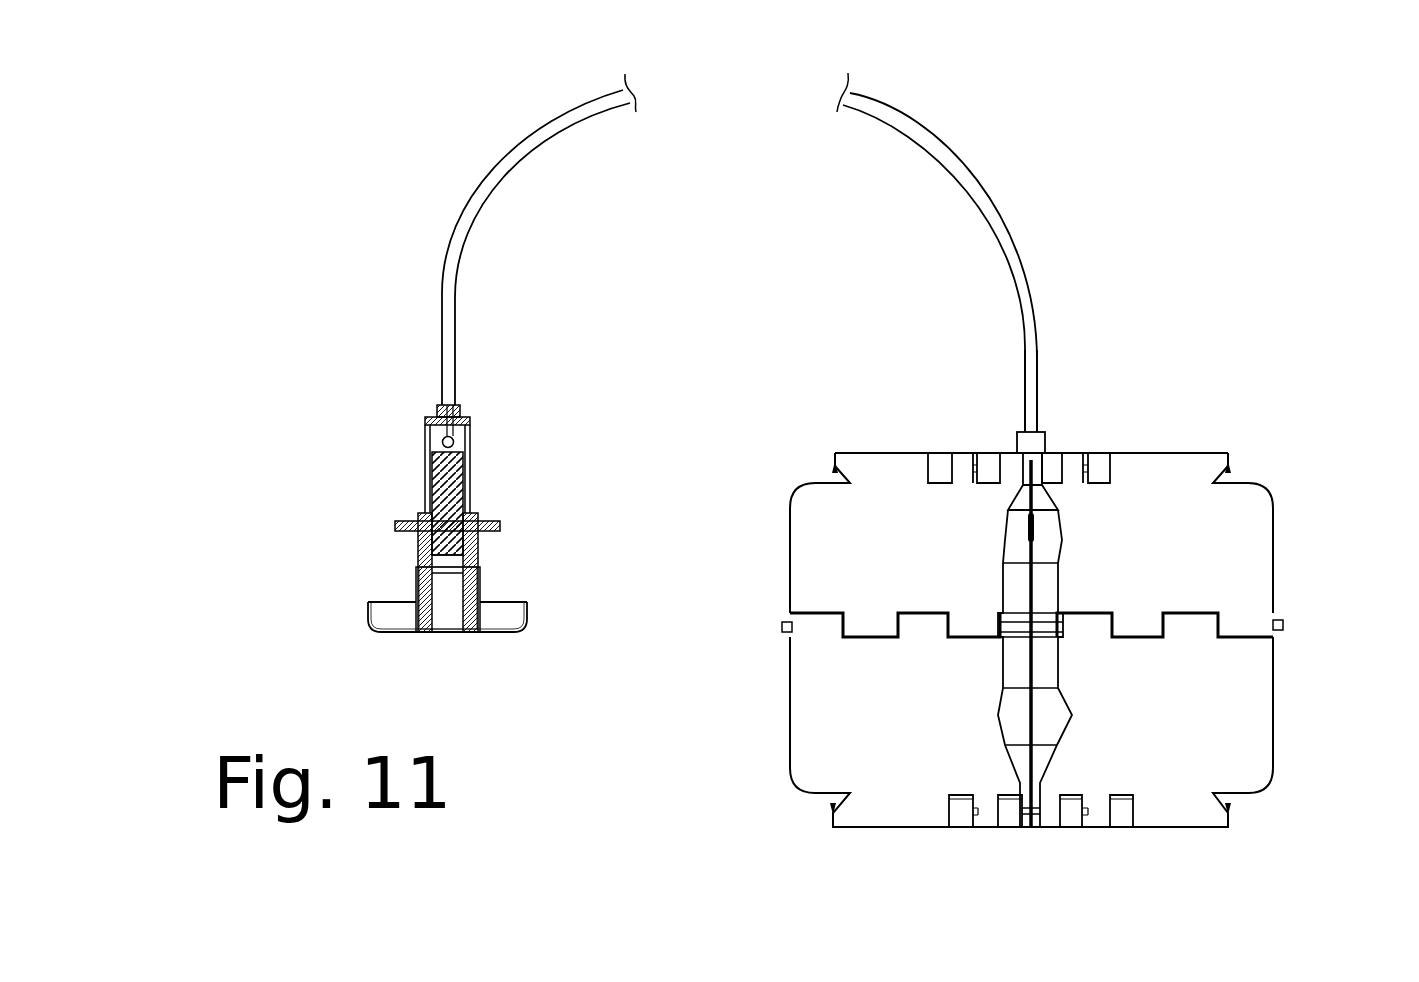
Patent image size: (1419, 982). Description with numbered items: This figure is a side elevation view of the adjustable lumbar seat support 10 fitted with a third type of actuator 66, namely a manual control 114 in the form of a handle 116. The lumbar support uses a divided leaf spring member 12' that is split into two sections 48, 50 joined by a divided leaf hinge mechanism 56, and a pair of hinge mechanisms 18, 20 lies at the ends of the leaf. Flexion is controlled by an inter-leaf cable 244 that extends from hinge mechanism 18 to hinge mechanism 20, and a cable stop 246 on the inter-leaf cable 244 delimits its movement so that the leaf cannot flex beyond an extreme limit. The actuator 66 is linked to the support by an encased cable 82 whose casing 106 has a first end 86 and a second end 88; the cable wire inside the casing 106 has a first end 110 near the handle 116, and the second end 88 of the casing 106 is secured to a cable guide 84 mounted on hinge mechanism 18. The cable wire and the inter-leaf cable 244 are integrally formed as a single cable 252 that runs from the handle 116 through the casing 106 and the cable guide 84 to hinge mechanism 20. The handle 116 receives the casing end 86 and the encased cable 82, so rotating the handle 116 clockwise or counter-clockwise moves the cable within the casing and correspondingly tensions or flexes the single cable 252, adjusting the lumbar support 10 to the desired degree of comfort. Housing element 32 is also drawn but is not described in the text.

The adjustable lumbar seat support 10 is at (738, 675).
The leaf spring member 12' is at (1335, 566).
The hinge mechanism 18 is at (1229, 472).
The hinge mechanism 20 is at (1229, 805).
The housing 32 is at (770, 738).
The section 48 is at (1200, 738).
The section 50 is at (1250, 550).
The divided leaf hinge mechanism 56 is at (784, 628).
The actuator 66 is at (363, 547).
The encased cable 82 is at (908, 113).
The cable guide 84 is at (1043, 433).
The first end of the casing 86 is at (455, 382).
The second end of the casing 88 is at (1017, 422).
The casing 106 is at (972, 173).
The first end of the cable wire 110 is at (450, 434).
The manual control 114 is at (393, 468).
The handle 116 is at (478, 568).
The inter-leaf cable 244 is at (1032, 588).
The cable stop 246 is at (1036, 522).
The single cable 252 is at (975, 568).